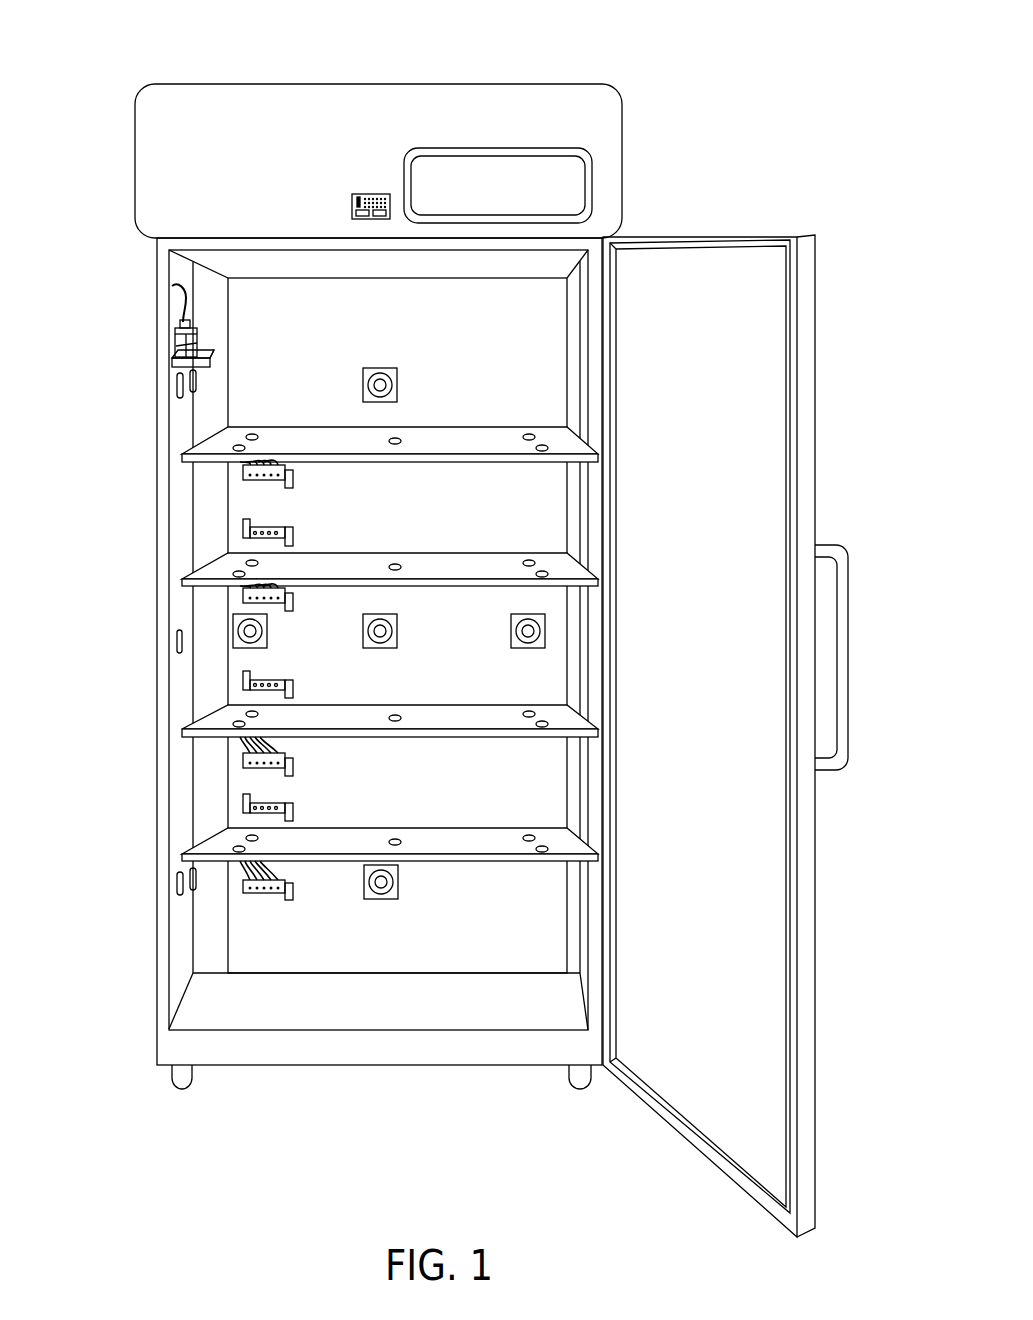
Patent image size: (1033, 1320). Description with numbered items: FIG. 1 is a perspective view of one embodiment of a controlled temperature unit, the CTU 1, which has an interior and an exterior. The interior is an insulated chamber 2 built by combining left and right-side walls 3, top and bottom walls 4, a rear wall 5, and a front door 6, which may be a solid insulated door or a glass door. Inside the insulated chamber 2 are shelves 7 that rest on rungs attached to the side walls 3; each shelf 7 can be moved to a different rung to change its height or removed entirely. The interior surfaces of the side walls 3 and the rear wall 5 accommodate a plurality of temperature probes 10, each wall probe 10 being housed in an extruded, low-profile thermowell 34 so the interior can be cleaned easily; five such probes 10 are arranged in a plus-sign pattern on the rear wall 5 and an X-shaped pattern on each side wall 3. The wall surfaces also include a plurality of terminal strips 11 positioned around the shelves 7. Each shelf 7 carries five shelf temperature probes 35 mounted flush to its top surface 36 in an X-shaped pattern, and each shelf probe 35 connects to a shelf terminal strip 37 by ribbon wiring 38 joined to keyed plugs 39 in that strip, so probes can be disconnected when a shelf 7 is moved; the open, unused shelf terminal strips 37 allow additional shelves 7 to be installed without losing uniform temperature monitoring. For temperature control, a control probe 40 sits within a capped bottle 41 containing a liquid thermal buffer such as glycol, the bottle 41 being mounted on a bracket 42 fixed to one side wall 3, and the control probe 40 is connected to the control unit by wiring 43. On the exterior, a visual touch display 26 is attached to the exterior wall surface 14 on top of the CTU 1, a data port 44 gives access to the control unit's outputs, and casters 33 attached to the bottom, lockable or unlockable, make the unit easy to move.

The controlled temperature unit (CTU) 1 is at (702, 175).
The insulated chamber 2 is at (268, 392).
The left and right-side walls 3 is at (182, 930).
The top and bottom walls 4 is at (215, 84).
The rear wall 5 is at (250, 787).
The front door 6 is at (813, 455).
The shelves 7 is at (180, 580).
The temperature probes 10 is at (232, 617).
The terminal strips 11 is at (267, 632).
The exterior wall surface 14 is at (167, 127).
The visual touch display 26 is at (572, 148).
The casters 33 is at (175, 1080).
The thermowell 34 is at (232, 632).
The shelf temperature probes 35 is at (395, 566).
The top surface 36 is at (227, 563).
The shelf terminal strip 37 is at (293, 760).
The ribbon wiring 38 is at (232, 748).
The keyed plugs 39 is at (232, 682).
The control probe 40 is at (175, 318).
The capped bottle 41 is at (173, 335).
The bracket 42 is at (167, 363).
The wiring 43 is at (170, 277).
The data port 44 is at (368, 195).